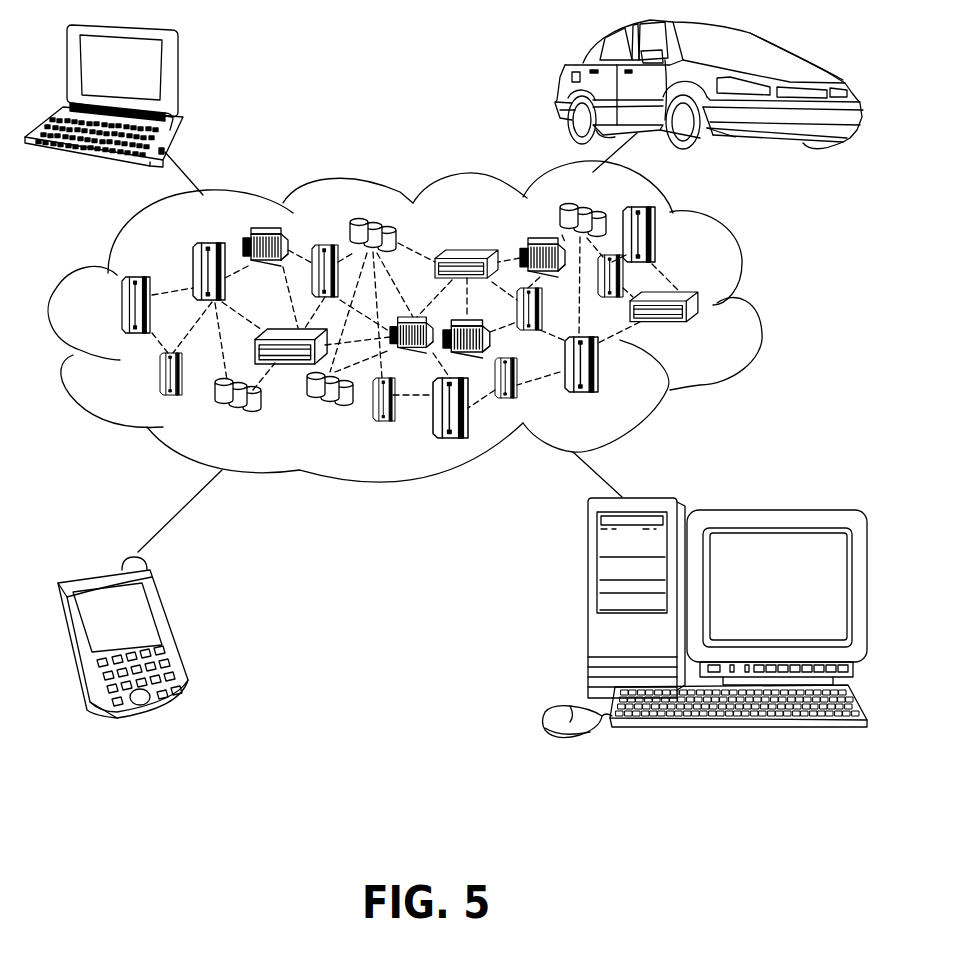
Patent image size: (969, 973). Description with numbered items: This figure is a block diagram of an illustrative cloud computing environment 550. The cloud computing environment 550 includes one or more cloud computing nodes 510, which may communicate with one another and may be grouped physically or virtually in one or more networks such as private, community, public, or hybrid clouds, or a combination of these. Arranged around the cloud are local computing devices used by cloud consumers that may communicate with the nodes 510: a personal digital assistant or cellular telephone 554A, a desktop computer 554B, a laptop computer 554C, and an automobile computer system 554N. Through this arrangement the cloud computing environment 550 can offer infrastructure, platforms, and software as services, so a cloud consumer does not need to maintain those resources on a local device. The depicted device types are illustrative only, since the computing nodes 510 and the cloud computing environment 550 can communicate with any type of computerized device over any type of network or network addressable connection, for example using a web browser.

The cloud computing nodes 510 is at (465, 342).
The cloud computing environment 550 is at (716, 327).
The personal digital assistant (PDA) or cellular telephone 554A is at (173, 630).
The desktop computer 554B is at (588, 607).
The laptop computer 554C is at (180, 73).
The automobile computer system 554N is at (565, 75).